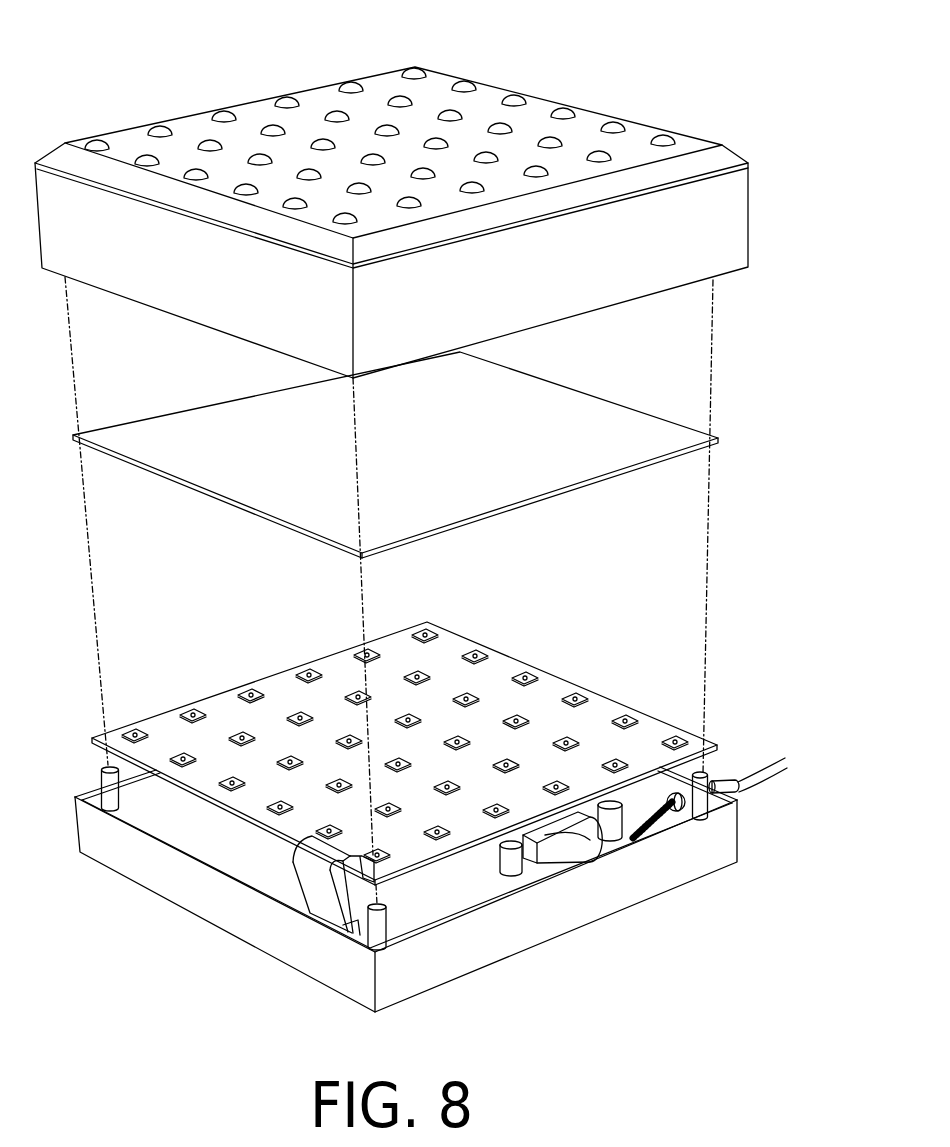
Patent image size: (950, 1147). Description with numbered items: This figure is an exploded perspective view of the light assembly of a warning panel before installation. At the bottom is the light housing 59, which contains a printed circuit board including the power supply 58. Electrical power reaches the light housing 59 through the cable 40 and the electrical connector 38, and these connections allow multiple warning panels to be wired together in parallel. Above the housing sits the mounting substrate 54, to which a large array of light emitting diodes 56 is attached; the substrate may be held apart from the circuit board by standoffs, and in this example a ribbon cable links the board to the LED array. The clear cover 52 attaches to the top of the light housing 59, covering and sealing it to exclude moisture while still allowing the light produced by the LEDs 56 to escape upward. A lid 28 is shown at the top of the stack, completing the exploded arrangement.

The lid 28 is at (522, 123).
The clear cover 52 is at (590, 440).
The mounting substrate 54 is at (587, 718).
The light emitting diodes 56 is at (618, 765).
The cable 40 is at (743, 778).
The electrical connector 38 is at (713, 792).
The power supply 58 is at (560, 848).
The light housing 59 is at (322, 952).